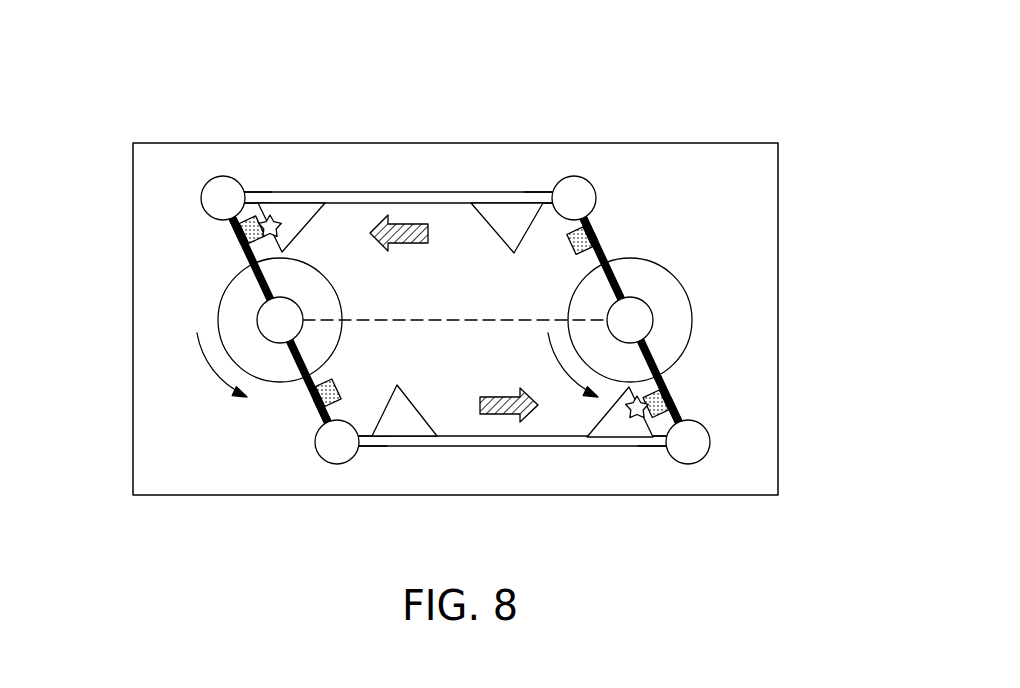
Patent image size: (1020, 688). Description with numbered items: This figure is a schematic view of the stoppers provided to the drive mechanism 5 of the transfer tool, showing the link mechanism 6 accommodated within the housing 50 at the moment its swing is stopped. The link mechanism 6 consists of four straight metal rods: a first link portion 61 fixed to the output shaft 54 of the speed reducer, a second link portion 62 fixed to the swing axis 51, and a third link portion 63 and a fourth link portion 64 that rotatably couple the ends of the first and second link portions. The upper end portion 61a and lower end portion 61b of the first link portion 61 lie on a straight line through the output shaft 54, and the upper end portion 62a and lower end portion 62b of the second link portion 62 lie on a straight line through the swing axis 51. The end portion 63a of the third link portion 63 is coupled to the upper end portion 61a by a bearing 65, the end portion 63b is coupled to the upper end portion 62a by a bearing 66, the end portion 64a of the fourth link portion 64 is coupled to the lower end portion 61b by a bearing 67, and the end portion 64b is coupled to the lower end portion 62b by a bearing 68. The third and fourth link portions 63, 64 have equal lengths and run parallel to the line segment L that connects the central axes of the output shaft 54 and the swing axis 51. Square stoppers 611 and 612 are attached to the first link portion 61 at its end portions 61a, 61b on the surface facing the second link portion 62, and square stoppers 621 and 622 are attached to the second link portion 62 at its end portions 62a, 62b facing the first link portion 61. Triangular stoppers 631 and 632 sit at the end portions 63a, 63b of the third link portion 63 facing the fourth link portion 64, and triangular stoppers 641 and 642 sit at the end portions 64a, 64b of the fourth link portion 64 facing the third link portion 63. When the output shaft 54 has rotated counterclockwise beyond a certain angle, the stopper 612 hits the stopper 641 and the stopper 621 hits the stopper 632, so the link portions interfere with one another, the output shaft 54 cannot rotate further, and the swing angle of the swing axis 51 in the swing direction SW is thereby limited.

The drive mechanism 5 is at (762, 82).
The link mechanism 6 is at (382, 152).
The housing 50 is at (778, 190).
The swing axis 51 is at (228, 308).
The output shaft 54 is at (680, 297).
The first link portion 61 is at (660, 355).
The upper end portion of the first link portion 61a is at (598, 225).
The lower end portion of the first link portion 61b is at (692, 416).
The stopper 611 is at (603, 240).
The stopper 612 is at (665, 390).
The second link portion 62 is at (250, 263).
The upper end portion of the second link portion 62a is at (235, 224).
The lower end portion of the second link portion 62b is at (318, 424).
The stopper 621 is at (248, 238).
The stopper 622 is at (320, 400).
The third link portion 63 is at (435, 191).
The end portion of the third link portion 63a is at (541, 198).
The end portion of the third link portion 63b is at (255, 190).
The stopper 631 is at (508, 207).
The stopper 632 is at (313, 192).
The fourth link portion 64 is at (518, 447).
The end portion of the fourth link portion 64a is at (647, 447).
The end portion of the fourth link portion 64b is at (372, 447).
The stopper 641 is at (608, 430).
The stopper 642 is at (410, 430).
The bearing 65 is at (589, 178).
The bearing 66 is at (206, 178).
The bearing 67 is at (705, 462).
The bearing 68 is at (320, 460).
The line segment L is at (489, 318).
The swing direction SW is at (380, 365).